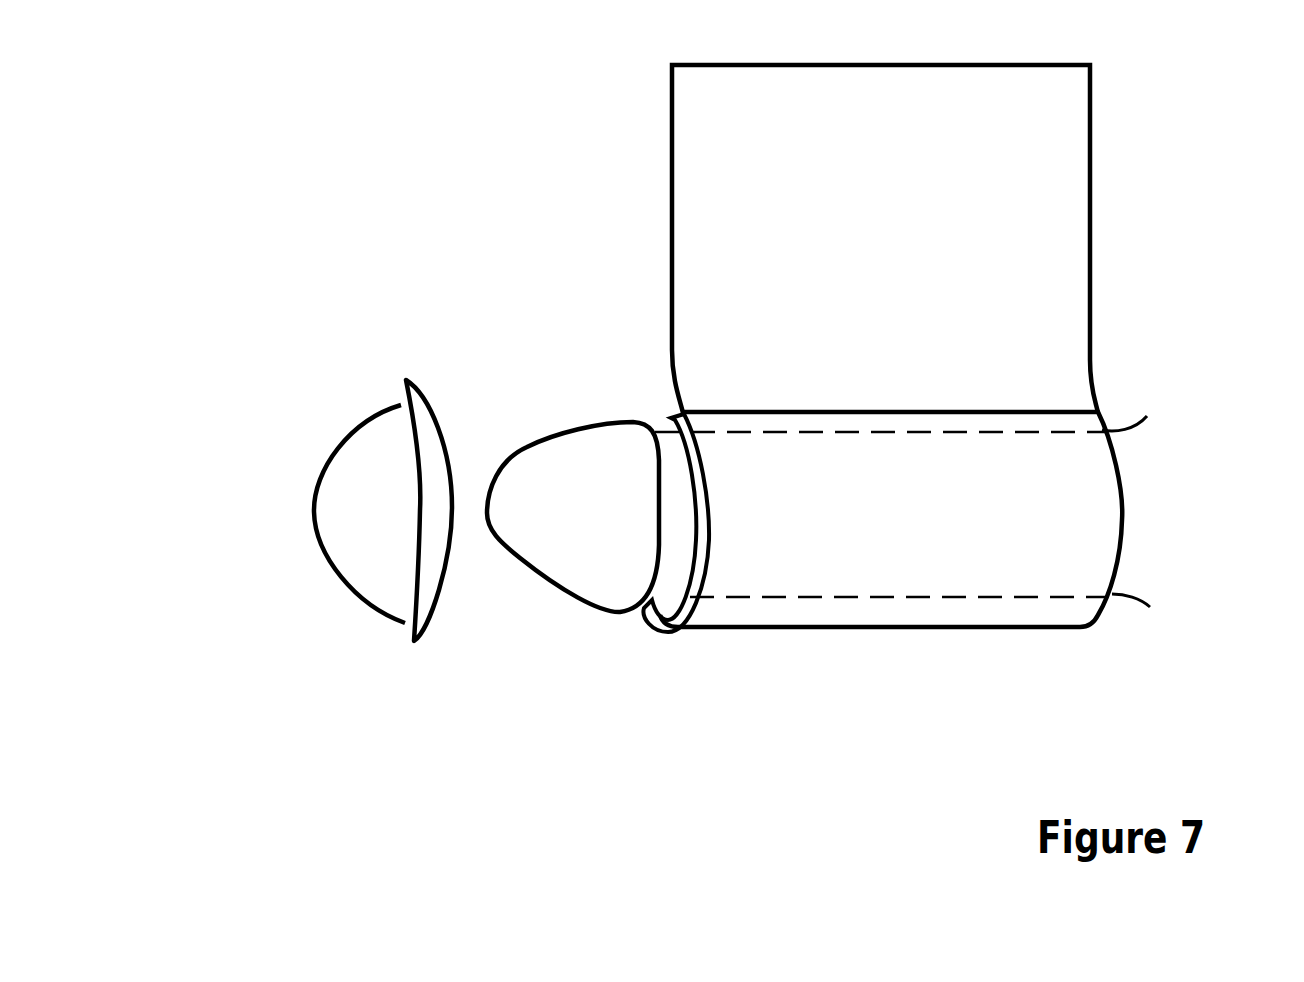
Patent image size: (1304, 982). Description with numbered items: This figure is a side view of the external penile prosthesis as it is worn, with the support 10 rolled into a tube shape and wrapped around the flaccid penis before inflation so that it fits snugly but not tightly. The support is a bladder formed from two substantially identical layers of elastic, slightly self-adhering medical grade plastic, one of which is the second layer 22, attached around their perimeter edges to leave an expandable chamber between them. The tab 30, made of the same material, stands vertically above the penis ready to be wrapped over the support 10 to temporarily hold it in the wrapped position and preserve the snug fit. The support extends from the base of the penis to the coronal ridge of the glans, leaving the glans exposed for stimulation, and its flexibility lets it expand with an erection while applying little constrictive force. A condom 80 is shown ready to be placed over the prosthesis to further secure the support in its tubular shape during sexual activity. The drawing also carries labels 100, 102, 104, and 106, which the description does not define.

The support 10 is at (825, 555).
The second layer 22 is at (958, 535).
The tab 30 is at (1042, 193).
The condom 80 is at (365, 483).
The end cap 100 is at (575, 432).
The cap body 102 is at (568, 542).
The retaining clip 104 is at (670, 578).
The end face 106 is at (1147, 525).